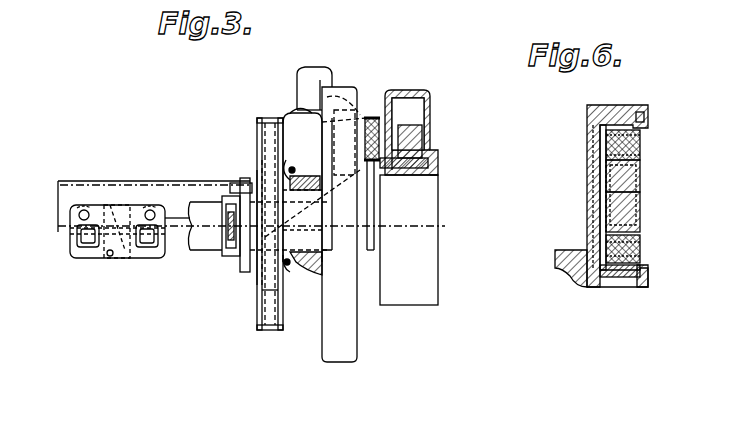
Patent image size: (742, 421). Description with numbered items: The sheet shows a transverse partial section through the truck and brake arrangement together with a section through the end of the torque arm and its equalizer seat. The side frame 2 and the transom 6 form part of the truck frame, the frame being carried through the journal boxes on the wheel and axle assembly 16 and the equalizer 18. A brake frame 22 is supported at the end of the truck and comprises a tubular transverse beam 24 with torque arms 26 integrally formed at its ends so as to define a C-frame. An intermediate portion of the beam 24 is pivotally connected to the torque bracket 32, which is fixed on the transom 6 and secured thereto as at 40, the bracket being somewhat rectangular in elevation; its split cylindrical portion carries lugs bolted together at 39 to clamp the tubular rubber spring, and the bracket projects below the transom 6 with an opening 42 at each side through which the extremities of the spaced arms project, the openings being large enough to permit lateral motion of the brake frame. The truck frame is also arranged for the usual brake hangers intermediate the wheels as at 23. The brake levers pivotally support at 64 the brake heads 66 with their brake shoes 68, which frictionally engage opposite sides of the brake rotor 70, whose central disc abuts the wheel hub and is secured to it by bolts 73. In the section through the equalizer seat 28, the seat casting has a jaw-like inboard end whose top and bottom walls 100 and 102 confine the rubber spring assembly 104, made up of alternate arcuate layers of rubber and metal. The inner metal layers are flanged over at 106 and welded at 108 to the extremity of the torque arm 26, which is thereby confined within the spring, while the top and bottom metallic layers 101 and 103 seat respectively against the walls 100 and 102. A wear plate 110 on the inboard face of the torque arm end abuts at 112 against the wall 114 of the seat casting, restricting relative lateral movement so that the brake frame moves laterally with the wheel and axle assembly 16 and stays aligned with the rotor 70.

In FIG. 3, the side frame 2 is at (415, 90).
In FIG. 3, the transom 6 is at (164, 183).
In FIG. 3, the wheel and axle assembly 16 is at (352, 335).
In FIG. 3, the equalizer 18 is at (420, 147).
In FIG. 3, the brake frame 22 is at (337, 250).
In FIG. 3, the brake hanger location 23 is at (340, 128).
In FIG. 3, the transverse beam 24 is at (198, 200).
In FIG. 3, the torque arm 26 is at (372, 118).
In FIG. 6, the torque arm 26 is at (640, 156).
In FIG. 3, the equalizer seat 28 is at (380, 165).
In FIG. 6, the equalizer seat 28 is at (570, 262).
In FIG. 3, the torque bracket 32 is at (70, 252).
In FIG. 3, the bolts 39 is at (110, 257).
In FIG. 3, the securing points 40 is at (150, 210).
In FIG. 3, the opening 42 is at (80, 235).
In FIG. 3, the pivot 64 is at (230, 258).
In FIG. 3, the brake head 66 is at (240, 272).
In FIG. 3, the brake shoe 68 is at (235, 300).
In FIG. 3, the brake rotor 70 is at (286, 330).
In FIG. 3, the bolts 73 is at (302, 177).
In FIG. 6, the top wall 100 is at (625, 105).
In FIG. 6, the top metallic layer 101 is at (645, 118).
In FIG. 6, the bottom wall 102 is at (612, 290).
In FIG. 6, the bottom metallic layer 103 is at (640, 286).
In FIG. 6, the rubber spring assembly 104 is at (641, 245).
In FIG. 6, the flanges 106 is at (641, 181).
In FIG. 6, the welds 108 is at (641, 196).
In FIG. 6, the wear plate 110 is at (600, 176).
In FIG. 6, the abutment 112 is at (606, 192).
In FIG. 6, the wall 114 is at (593, 212).